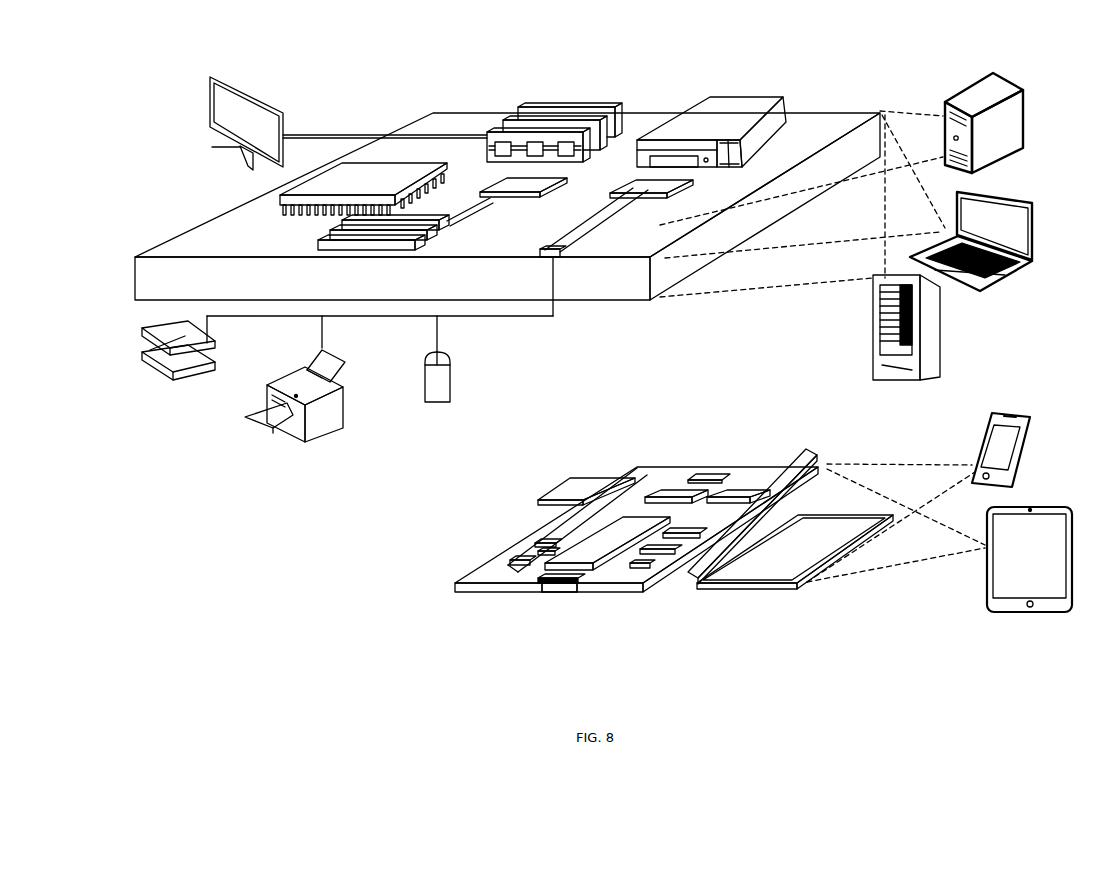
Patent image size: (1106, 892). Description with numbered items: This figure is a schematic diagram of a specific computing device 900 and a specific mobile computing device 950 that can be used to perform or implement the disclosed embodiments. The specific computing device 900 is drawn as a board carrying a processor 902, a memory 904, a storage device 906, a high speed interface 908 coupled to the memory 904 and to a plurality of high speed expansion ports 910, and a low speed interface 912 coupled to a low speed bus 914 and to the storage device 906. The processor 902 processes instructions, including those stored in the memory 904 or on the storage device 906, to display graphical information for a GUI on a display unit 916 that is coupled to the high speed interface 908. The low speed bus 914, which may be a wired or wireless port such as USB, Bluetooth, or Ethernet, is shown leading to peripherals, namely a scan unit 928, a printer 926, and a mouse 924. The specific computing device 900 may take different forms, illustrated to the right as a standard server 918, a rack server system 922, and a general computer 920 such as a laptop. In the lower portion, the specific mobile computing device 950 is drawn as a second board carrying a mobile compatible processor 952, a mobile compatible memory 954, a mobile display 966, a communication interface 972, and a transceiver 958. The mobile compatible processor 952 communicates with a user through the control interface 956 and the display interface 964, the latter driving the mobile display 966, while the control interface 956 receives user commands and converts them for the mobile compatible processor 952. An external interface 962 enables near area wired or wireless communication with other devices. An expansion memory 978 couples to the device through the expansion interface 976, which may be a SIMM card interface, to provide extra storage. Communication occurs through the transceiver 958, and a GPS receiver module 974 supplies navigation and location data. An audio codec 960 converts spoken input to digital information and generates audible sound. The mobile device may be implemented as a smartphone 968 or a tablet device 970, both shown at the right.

The specific computing device 900 is at (383, 109).
The processor 902 is at (293, 210).
The memory 904 is at (546, 107).
The storage device 906 is at (717, 98).
The high speed interface 908 is at (505, 186).
The high speed expansion ports 910 is at (333, 230).
The low speed interface 912 is at (660, 190).
The low speed bus 914 is at (563, 262).
The display unit 916 is at (216, 80).
The standard server 918 is at (1022, 100).
The general computer 920 is at (1030, 216).
The rack server system 922 is at (873, 347).
The mouse 924 is at (437, 402).
The printer 926 is at (140, 352).
The scan unit 928 is at (300, 445).
The specific mobile computing device 950 is at (446, 583).
The mobile compatible processor 952 is at (585, 590).
The mobile compatible memory 954 is at (510, 553).
The control interface 956 is at (665, 556).
The transceiver 958 is at (820, 466).
The audio codec 960 is at (688, 540).
The external interface 962 is at (560, 590).
The display interface 964 is at (640, 570).
The mobile display 966 is at (800, 590).
The smartphone 968 is at (983, 445).
The tablet device 970 is at (1030, 610).
The communication interface 972 is at (680, 493).
The receiver module 974 is at (712, 478).
The expansion interface 976 is at (628, 478).
The expansion memory 978 is at (552, 488).